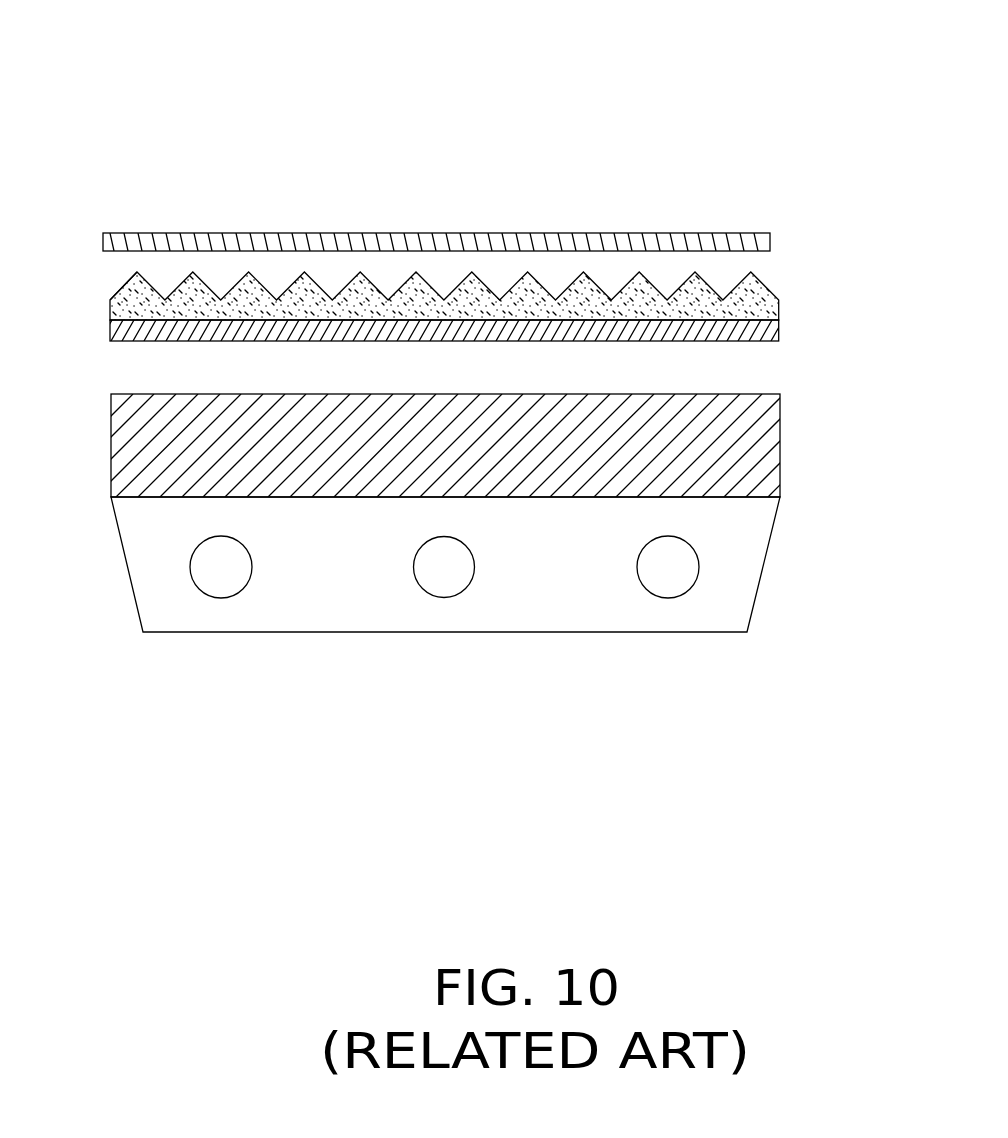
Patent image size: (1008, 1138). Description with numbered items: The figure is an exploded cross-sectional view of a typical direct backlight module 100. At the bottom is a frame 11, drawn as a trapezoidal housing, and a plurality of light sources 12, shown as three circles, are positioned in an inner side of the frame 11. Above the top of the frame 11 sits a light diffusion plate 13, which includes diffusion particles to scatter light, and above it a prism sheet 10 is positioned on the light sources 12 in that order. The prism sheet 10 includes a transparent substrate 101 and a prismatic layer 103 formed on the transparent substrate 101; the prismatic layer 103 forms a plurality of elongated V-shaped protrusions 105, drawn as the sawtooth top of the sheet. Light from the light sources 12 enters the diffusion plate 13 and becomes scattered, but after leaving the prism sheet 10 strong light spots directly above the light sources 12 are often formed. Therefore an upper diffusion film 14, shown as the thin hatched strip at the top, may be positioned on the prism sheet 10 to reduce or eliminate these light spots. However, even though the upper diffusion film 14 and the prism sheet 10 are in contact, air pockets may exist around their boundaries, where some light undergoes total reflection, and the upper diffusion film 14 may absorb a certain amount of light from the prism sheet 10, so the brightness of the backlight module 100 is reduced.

The direct backlight module 100 is at (367, 83).
The upper diffusion film 14 is at (769, 234).
The prism sheet 10 is at (863, 284).
The prismatic layer 103 is at (752, 313).
The transparent substrate 101 is at (763, 333).
The elongated V-shaped protrusions 105 is at (130, 282).
The light diffusion plate 13 is at (780, 443).
The light sources 12 is at (677, 557).
The frame 11 is at (762, 578).